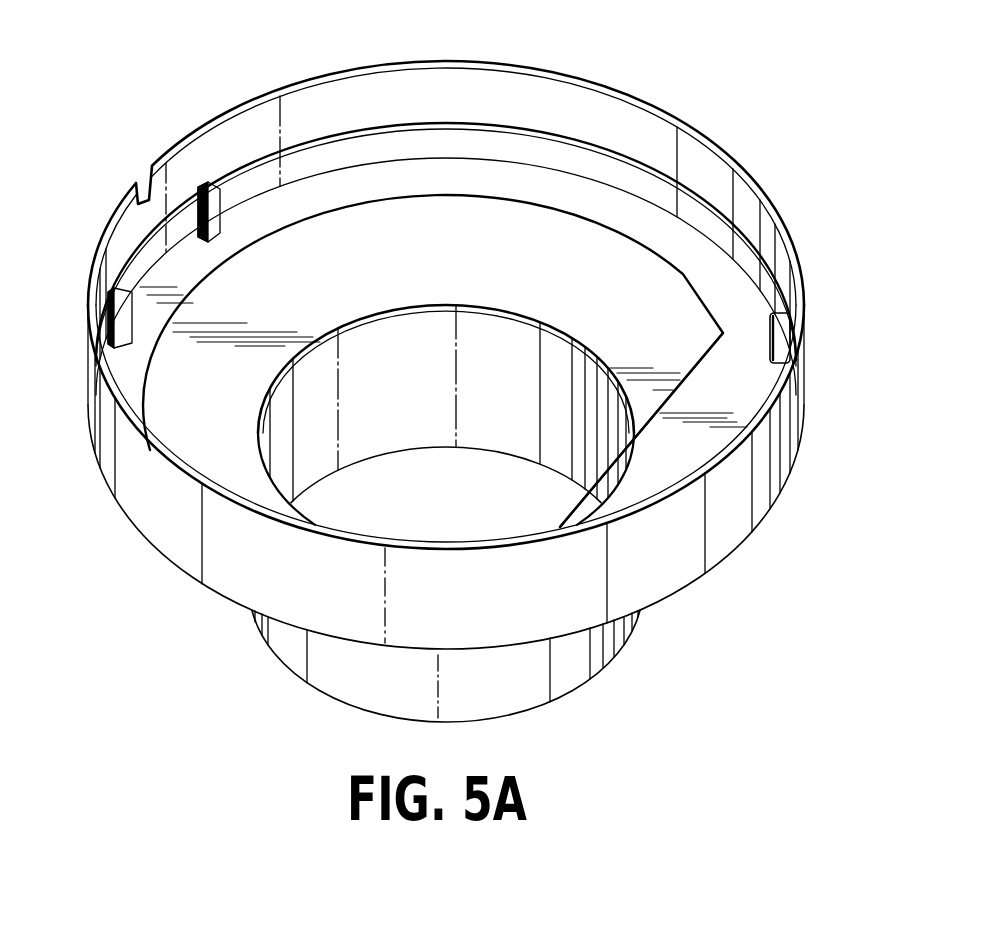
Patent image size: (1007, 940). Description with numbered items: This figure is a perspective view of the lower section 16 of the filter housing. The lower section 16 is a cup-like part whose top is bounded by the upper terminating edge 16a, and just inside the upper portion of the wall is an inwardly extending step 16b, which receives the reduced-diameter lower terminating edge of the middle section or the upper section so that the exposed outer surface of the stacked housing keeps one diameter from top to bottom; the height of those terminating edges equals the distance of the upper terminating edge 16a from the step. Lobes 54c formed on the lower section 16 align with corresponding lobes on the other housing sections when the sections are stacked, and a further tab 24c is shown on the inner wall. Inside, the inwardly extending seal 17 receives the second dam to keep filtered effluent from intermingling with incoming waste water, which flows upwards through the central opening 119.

The lower section 16 is at (806, 181).
The upper terminating edge 16a is at (567, 70).
The inwardly extending step 16b is at (620, 140).
The lobes 54c is at (208, 187).
The tab 24c is at (790, 262).
The inwardly extending seal 17 is at (723, 403).
The opening 119 is at (353, 500).